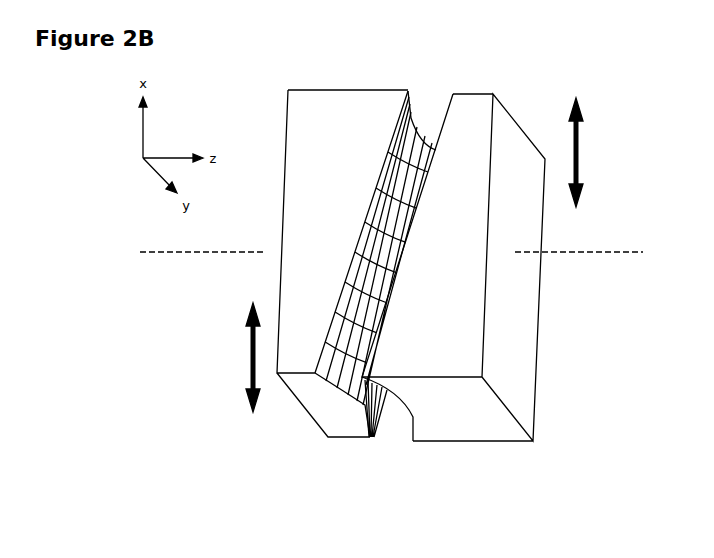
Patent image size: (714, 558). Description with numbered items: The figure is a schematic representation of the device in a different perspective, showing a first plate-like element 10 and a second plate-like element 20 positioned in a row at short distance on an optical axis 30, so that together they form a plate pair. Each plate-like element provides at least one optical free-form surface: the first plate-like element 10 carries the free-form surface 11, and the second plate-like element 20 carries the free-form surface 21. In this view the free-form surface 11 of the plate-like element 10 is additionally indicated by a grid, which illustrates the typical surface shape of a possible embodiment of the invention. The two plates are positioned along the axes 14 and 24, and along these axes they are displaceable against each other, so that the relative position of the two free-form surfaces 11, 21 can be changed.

The first plate-like element 10 is at (322, 433).
The optical free-form surface 11 is at (369, 440).
The axis 14 is at (245, 373).
The second plate-like element 20 is at (533, 443).
The optical free-form surface 21 is at (417, 443).
The axis 24 is at (589, 163).
The optical axis 30 is at (173, 258).